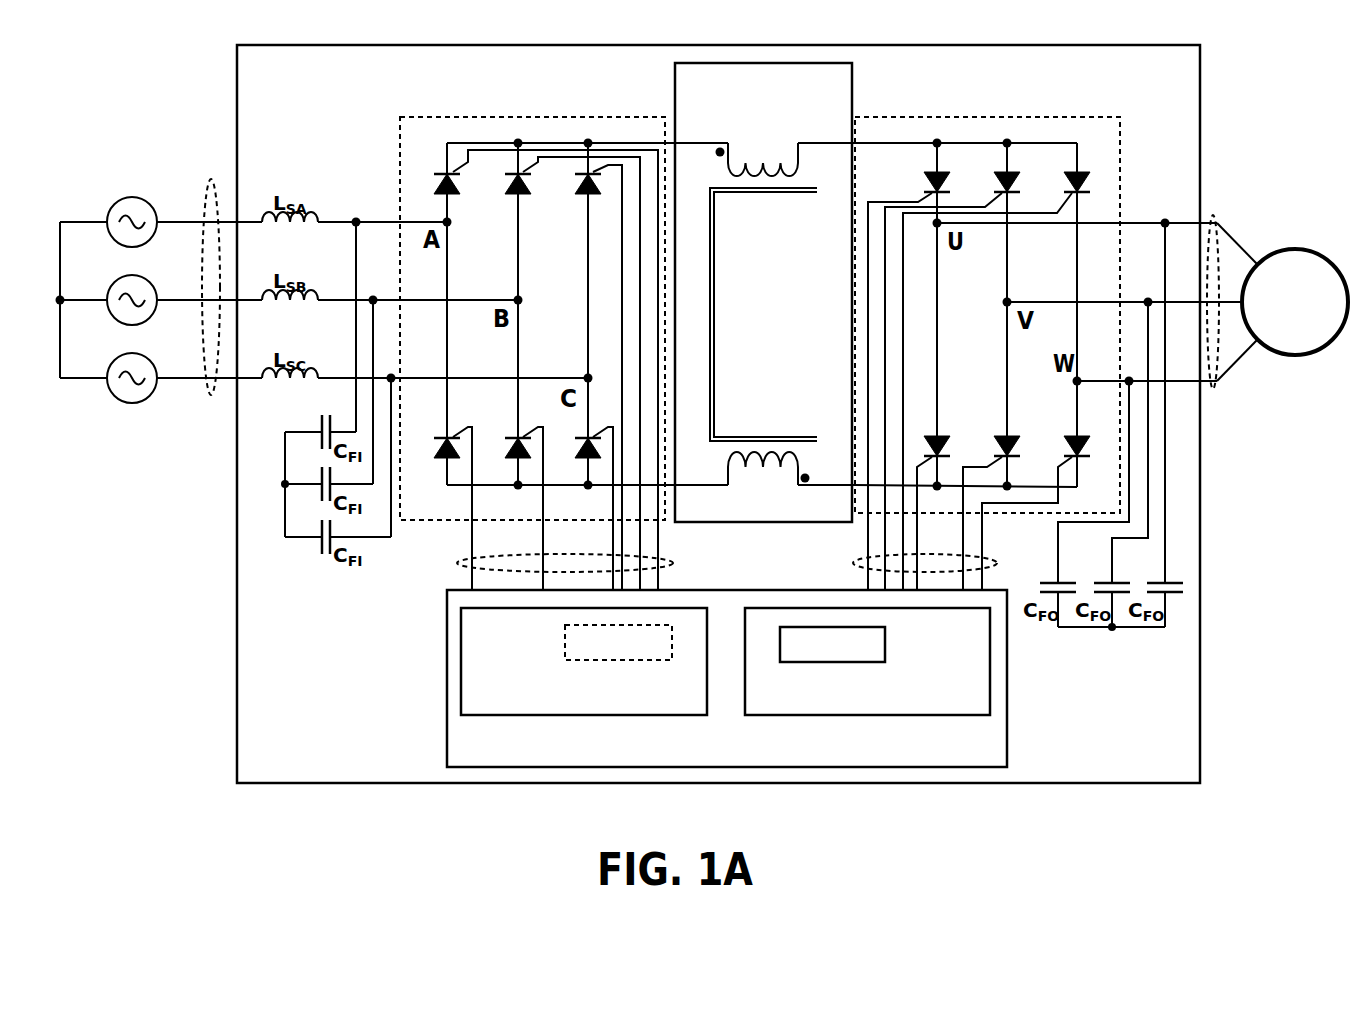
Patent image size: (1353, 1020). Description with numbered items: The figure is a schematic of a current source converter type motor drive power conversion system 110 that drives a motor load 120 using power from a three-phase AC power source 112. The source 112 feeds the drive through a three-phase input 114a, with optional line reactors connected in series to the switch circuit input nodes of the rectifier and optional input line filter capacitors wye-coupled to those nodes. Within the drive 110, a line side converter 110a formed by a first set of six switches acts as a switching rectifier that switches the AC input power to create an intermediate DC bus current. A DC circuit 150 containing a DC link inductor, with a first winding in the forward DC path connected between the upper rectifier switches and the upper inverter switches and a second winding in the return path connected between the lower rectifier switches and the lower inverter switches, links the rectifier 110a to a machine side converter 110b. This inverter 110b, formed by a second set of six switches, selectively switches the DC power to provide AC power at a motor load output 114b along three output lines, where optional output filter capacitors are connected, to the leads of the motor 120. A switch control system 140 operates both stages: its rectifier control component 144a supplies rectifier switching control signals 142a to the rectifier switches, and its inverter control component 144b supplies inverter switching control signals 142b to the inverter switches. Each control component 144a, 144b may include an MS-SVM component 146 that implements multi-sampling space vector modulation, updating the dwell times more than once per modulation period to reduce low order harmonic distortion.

The motor drive power conversion system 110 is at (237, 82).
The line side converter 110a is at (400, 157).
The machine side converter 110b is at (1092, 117).
The AC power source 112 is at (119, 422).
The three-phase input 114a is at (208, 197).
The motor load output 114b is at (1216, 215).
The motor load 120 is at (1295, 302).
The switch control system 140 is at (447, 748).
The rectifier switching control signals 142a is at (457, 567).
The inverter switching control signals 142b is at (853, 567).
The rectifier control component 144a is at (461, 696).
The inverter control component 144b is at (990, 697).
The MS-SVM component 146 is at (565, 643).
The DC circuit 150 is at (675, 93).